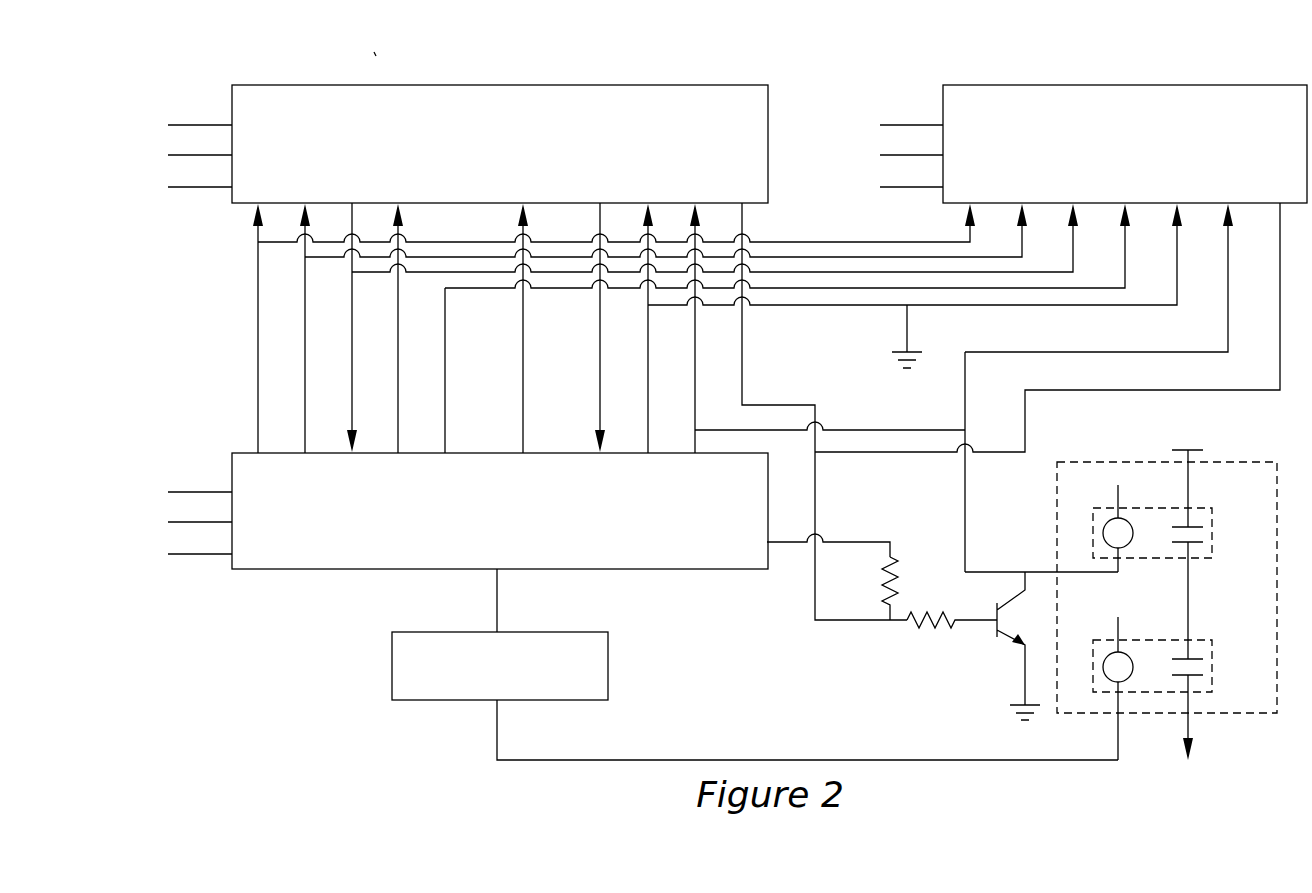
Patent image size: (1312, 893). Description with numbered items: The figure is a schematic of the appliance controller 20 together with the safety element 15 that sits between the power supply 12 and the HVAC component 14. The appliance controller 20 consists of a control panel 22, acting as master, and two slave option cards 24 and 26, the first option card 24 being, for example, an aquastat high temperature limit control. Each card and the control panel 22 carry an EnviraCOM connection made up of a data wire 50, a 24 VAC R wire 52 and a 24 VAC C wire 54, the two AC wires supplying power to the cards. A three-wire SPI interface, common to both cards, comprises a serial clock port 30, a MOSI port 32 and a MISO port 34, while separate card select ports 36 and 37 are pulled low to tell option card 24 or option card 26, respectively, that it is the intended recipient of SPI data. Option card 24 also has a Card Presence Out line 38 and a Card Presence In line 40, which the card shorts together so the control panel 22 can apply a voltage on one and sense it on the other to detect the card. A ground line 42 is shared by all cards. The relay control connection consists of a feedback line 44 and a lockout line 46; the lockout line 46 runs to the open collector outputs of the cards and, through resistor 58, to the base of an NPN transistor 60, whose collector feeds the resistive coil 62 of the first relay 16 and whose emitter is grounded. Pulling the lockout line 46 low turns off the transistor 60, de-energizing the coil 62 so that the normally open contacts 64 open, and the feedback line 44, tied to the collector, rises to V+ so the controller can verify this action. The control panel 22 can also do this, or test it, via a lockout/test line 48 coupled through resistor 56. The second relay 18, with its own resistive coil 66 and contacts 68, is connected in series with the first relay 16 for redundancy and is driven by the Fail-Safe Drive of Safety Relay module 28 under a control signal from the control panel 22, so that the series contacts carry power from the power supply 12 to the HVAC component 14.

The appliance controller 20 is at (374, 52).
The control panel 22 is at (295, 570).
The first option card 24 is at (500, 85).
The second option card 26 is at (1125, 85).
The Fail-Safe Drive of Safety Relay module 28 is at (392, 666).
The serial clock (SCK) port 30 is at (258, 260).
The Master Output Slave Input (MOSI) port 32 is at (305, 288).
The Master Input Slave Output (MISO) port 34 is at (352, 316).
The card select (CS_1) port 36 is at (398, 400).
The card select (CS_2) port 37 is at (445, 420).
The Card Presence Out line 38 is at (523, 450).
The Card Presence In line 40 is at (602, 225).
The ground line 42 is at (648, 442).
The feedback line 44 is at (695, 312).
The lockout line 46 is at (742, 360).
The lockout/test line 48 is at (868, 493).
The data wire 50 is at (524, 295).
The 24 VAC R wire 52 is at (507, 296).
The 24 VAC C wire 54 is at (524, 375).
The resistor 56 is at (886, 576).
The resistor 58 is at (928, 628).
The NPN transistor 60 is at (1000, 602).
The resistive coil 62 is at (1106, 522).
The contacts 64 is at (1197, 522).
The resistive coil 66 is at (1106, 655).
The contacts 68 is at (1197, 653).
The first relay 16 is at (1213, 549).
The second relay 18 is at (1213, 681).
The safety element 15 is at (1097, 462).
The power supply 12 is at (1187, 462).
The HVAC component 14 is at (1187, 779).